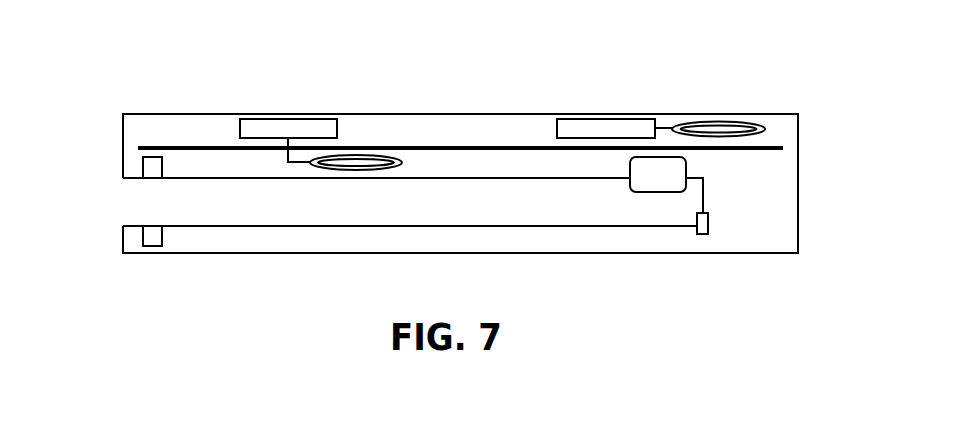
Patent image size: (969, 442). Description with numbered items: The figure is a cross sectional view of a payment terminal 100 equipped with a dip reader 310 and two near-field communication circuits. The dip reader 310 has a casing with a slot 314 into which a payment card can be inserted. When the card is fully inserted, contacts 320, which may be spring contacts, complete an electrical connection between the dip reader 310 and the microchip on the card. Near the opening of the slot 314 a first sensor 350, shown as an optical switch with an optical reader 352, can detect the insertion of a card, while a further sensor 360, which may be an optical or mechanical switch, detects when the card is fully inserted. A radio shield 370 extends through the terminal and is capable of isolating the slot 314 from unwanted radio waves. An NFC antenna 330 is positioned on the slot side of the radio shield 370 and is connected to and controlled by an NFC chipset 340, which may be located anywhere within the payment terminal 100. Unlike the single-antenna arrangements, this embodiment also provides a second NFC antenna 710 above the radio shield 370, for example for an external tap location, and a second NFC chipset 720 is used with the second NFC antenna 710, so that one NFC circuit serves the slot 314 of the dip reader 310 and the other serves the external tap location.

The payment terminal 100 is at (762, 69).
The dip reader 310 is at (762, 242).
The slot 314 is at (128, 193).
The contacts 320 is at (655, 178).
The NFC antenna 330 is at (387, 162).
The NFC chipset 340 is at (288, 128).
The first sensor 350 is at (150, 167).
The optical reader 352 is at (153, 240).
The sensor 360 is at (703, 233).
The radio shield 370 is at (525, 143).
The second NFC antenna 710 is at (683, 127).
The second NFC chipset 720 is at (602, 127).